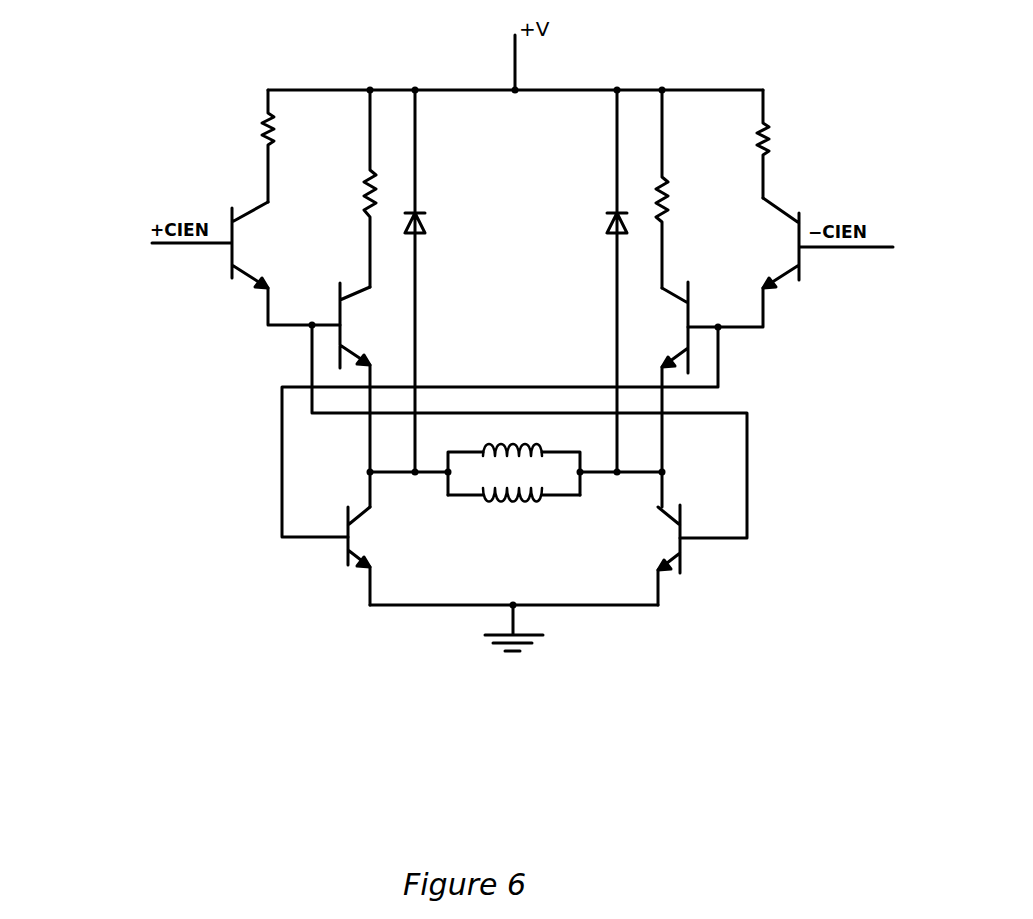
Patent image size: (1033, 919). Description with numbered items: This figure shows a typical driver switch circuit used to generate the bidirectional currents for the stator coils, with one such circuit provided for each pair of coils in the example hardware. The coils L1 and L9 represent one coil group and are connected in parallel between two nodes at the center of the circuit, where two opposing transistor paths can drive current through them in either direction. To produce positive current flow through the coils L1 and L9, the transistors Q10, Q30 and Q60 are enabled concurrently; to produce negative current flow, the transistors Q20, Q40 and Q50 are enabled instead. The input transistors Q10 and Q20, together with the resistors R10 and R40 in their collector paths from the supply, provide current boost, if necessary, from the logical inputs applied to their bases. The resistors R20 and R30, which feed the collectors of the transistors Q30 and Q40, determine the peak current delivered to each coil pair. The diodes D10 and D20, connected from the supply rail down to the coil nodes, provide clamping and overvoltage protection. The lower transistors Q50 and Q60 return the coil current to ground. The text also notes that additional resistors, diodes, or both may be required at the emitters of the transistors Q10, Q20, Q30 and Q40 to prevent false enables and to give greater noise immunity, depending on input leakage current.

The resistor R10 is at (241, 146).
The resistor R20 is at (349, 188).
The resistor R30 is at (686, 189).
The resistor R40 is at (789, 144).
The diode D10 is at (441, 281).
The diode D20 is at (594, 281).
The transistor Q10 is at (246, 263).
The transistor Q20 is at (790, 262).
The transistor Q30 is at (364, 395).
The transistor Q40 is at (662, 394).
The transistor Q50 is at (373, 556).
The transistor Q60 is at (656, 555).
The coil L1 is at (514, 458).
The coil L9 is at (514, 509).